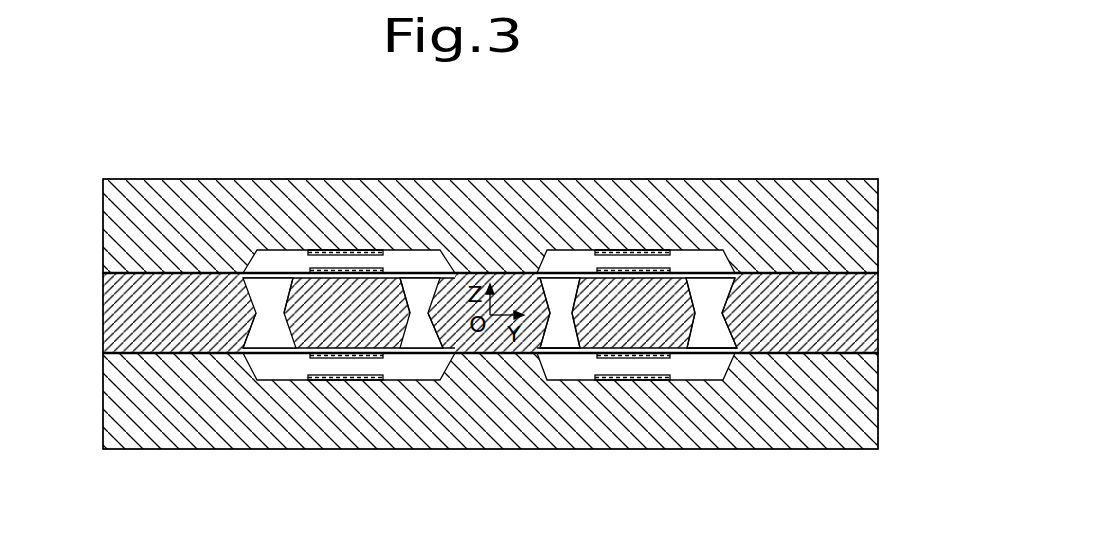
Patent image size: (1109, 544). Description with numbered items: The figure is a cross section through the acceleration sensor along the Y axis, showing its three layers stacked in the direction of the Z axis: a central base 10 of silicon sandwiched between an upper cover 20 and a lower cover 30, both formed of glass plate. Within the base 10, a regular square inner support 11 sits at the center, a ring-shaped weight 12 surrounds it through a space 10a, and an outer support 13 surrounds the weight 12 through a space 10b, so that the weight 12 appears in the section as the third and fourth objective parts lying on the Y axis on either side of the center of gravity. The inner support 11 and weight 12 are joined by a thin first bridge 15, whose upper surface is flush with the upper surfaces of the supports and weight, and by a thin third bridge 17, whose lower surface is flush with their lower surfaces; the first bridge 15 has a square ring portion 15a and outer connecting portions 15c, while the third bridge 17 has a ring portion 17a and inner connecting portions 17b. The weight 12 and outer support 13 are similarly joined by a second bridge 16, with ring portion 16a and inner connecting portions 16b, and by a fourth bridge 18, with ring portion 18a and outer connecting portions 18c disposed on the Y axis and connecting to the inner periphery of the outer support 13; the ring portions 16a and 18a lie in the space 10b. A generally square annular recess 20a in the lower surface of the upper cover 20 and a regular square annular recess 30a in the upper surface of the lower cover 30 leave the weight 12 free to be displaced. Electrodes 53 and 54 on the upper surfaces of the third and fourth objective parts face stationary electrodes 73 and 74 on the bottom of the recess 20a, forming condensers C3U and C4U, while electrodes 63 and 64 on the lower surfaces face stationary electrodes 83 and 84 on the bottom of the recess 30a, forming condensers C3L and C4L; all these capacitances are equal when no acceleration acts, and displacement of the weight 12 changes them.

The base 10 is at (881, 315).
The space 10a is at (445, 262).
The space 10b is at (258, 295).
The inner support 11 is at (490, 358).
The weight 12 is at (296, 354).
The outer support 13 is at (163, 354).
The first bridge 15 is at (565, 260).
The ring portion 15a is at (560, 290).
The outer connecting portions 15c is at (420, 300).
The second bridge 16 is at (702, 258).
The ring portion 16a is at (725, 270).
The inner connecting portions 16b is at (283, 295).
The third bridge 17 is at (557, 368).
The ring portion 17a is at (567, 350).
The inner connecting portions 17b is at (544, 355).
The fourth bridge 18 is at (713, 368).
The ring portion 18a is at (707, 356).
The outer connecting portions 18c is at (250, 370).
The upper cover 20 is at (881, 235).
The recess 20a is at (268, 247).
The lower cover 30 is at (881, 400).
The recess 30a is at (418, 381).
The electrode 53 is at (321, 249).
The electrode 54 is at (633, 249).
The electrode 63 is at (348, 359).
The electrode 64 is at (633, 359).
The stationary electrode 73 is at (363, 267).
The stationary electrode 74 is at (613, 267).
The stationary electrode 83 is at (377, 381).
The stationary electrode 84 is at (660, 381).
The condenser C3U is at (343, 249).
The condenser C3L is at (327, 368).
The condenser C4U is at (643, 249).
The condenser C4L is at (610, 384).